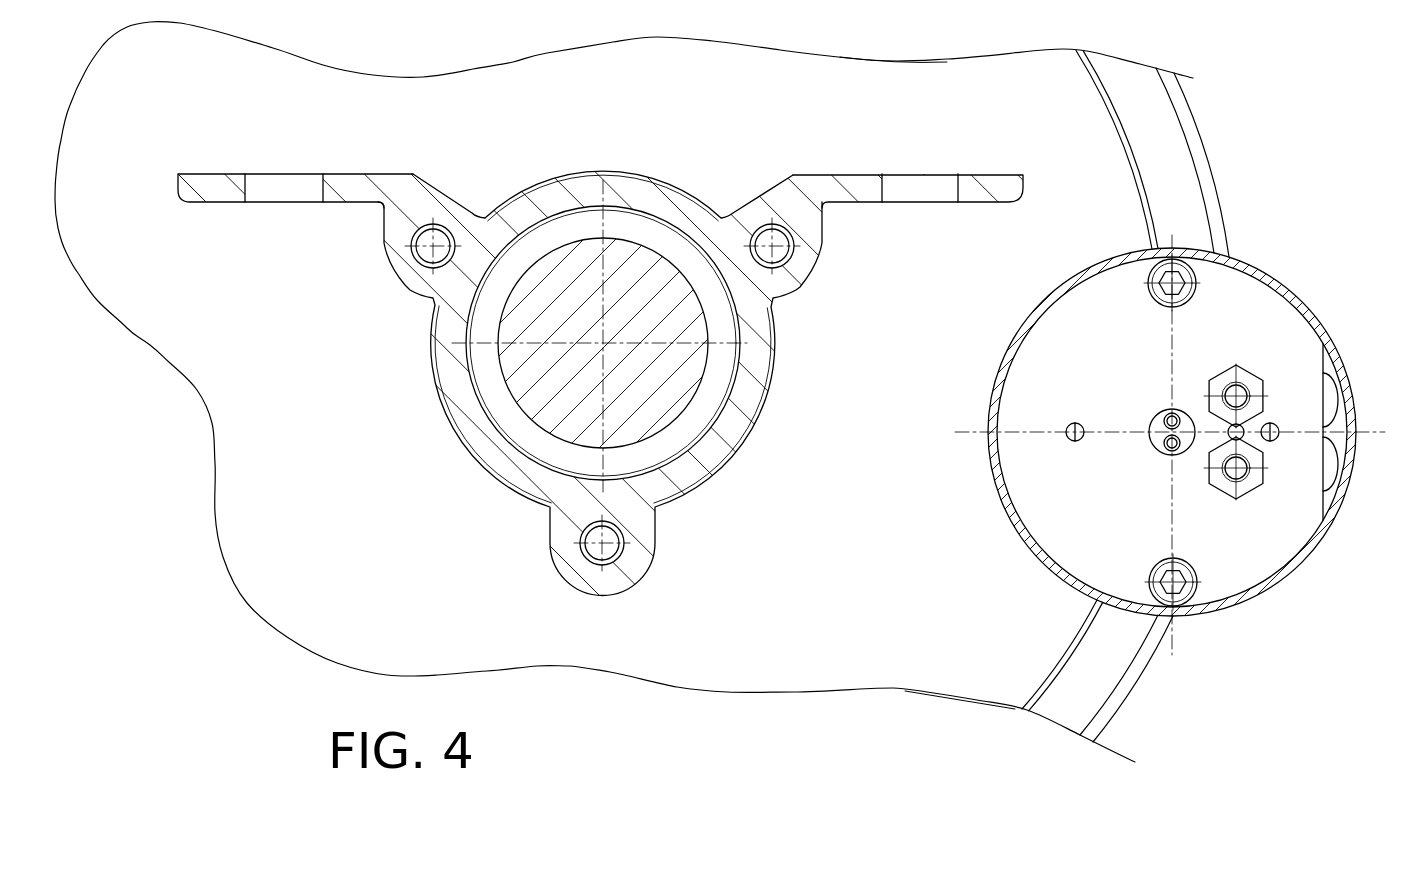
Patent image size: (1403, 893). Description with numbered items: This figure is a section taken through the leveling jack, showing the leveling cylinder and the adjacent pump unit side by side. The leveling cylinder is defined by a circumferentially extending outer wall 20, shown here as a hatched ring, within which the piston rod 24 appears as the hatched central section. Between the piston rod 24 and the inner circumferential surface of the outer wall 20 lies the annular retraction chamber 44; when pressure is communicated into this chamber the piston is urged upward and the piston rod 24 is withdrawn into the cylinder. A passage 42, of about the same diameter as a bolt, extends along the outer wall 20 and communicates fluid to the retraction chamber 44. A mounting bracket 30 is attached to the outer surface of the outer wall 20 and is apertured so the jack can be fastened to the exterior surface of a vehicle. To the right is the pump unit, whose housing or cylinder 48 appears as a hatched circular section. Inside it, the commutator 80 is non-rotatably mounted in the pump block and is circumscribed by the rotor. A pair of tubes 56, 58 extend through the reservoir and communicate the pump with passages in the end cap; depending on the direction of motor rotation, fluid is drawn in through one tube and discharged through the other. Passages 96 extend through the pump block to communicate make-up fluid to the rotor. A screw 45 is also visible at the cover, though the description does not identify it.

The outer wall 20 is at (745, 436).
The piston rod 24 is at (678, 381).
The mounting bracket 30 is at (353, 186).
The passage 42 is at (608, 552).
The annular retraction chamber 44 is at (667, 450).
The cover screw 45 is at (1187, 594).
The housing or cylinder 48 is at (1030, 252).
The tube 56 is at (1247, 380).
The tube 58 is at (1250, 492).
The commutator 80 is at (1148, 498).
The passages 96 is at (1066, 480).